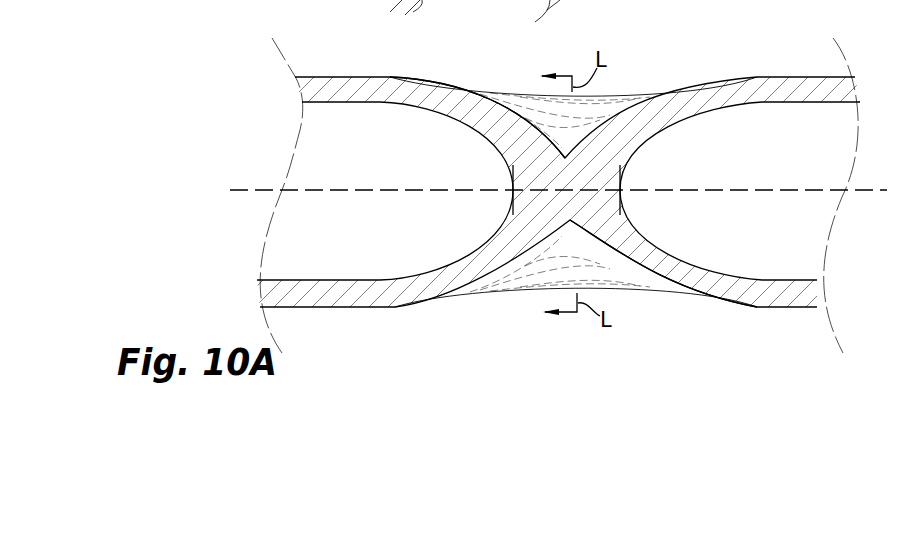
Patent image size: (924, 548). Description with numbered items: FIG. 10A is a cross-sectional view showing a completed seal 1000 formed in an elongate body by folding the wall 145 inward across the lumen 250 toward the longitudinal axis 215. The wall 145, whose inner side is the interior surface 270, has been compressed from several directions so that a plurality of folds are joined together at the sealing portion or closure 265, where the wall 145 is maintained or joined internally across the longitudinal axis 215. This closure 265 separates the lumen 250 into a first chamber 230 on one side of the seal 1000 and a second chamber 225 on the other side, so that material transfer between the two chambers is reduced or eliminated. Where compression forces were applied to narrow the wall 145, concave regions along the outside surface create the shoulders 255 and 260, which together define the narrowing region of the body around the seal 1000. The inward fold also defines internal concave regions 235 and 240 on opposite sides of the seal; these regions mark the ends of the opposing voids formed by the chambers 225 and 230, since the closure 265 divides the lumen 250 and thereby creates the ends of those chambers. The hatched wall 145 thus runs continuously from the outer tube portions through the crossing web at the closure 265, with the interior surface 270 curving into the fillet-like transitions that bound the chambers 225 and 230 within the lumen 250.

The completed seal 1000 is at (560, 328).
The wall 145 is at (770, 83).
The shoulder region 255 is at (638, 108).
The shoulder region 260 is at (498, 118).
The interior surface 270 is at (643, 135).
The internal concave region 240 is at (432, 143).
The internal concave region 235 is at (660, 213).
The sealing portion (closure) 265 is at (523, 175).
The longitudinal axis 215 is at (720, 192).
The first chamber 230 is at (332, 124).
The second chamber 225 is at (828, 128).
The lumen 250 is at (790, 253).